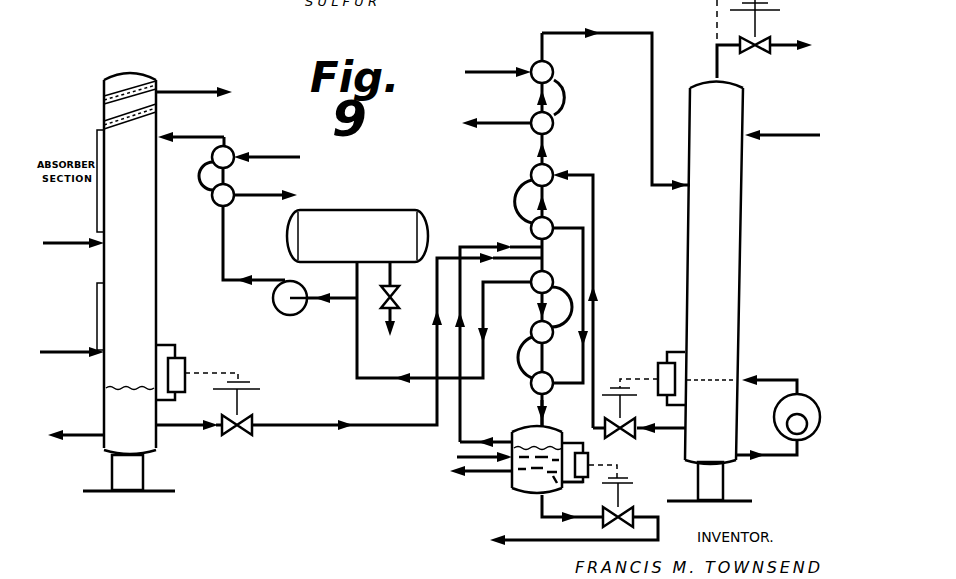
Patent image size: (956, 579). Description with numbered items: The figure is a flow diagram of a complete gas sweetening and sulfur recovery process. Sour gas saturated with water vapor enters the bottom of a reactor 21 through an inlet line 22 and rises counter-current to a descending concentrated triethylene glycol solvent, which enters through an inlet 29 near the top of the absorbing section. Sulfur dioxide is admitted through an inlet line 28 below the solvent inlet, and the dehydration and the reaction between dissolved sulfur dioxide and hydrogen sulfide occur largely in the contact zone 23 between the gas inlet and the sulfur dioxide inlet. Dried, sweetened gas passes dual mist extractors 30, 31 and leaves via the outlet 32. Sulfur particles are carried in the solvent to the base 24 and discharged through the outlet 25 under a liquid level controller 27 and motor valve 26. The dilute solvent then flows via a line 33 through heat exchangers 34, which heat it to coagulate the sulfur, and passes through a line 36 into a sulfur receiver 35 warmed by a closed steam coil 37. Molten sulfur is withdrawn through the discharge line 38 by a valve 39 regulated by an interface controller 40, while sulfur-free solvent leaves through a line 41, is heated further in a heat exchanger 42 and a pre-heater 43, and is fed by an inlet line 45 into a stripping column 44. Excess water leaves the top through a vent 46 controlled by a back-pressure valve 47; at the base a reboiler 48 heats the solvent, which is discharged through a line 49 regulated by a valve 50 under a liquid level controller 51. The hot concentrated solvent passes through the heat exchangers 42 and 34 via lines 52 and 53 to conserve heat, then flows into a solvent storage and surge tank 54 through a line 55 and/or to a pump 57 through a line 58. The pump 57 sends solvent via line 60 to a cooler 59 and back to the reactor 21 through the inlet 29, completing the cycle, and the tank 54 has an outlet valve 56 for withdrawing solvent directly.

The reactor 21 is at (157, 290).
The inlet line 22 is at (59, 352).
The contact zone 23 is at (107, 289).
The base 24 is at (150, 439).
The outlet 25 is at (180, 423).
The motor valve 26 is at (241, 435).
The liquid level controller 27 is at (187, 371).
The inlet line 28 is at (72, 249).
The inlet 29 is at (200, 142).
The mist extractor 30 is at (104, 117).
The mist extractor 31 is at (104, 92).
The outlet 32 is at (195, 88).
The line 33 is at (379, 424).
The heat exchangers 34 is at (549, 274).
The sulfur receiver 35 is at (506, 485).
The line 36 is at (538, 401).
The closed steam coil 37 is at (558, 488).
The discharge line 38 is at (533, 505).
The valve 39 is at (600, 519).
The interface controller 40 is at (590, 444).
The line 41 is at (461, 434).
The heat exchanger 42 is at (552, 222).
The pre-heater 43 is at (503, 98).
The stripping column 44 is at (745, 192).
The inlet line 45 is at (651, 154).
The vent 46 is at (713, 67).
The back-pressure valve 47 is at (781, 39).
The reboiler 48 is at (808, 438).
The line 49 is at (676, 435).
The valve 50 is at (628, 441).
The liquid level controller 51 is at (657, 368).
The line 52 is at (585, 243).
The line 53 is at (594, 238).
The solvent storage and surge tank 54 is at (391, 210).
The line 55 is at (356, 356).
The outlet valve 56 is at (405, 299).
The pump 57 is at (271, 303).
The line 58 is at (331, 287).
The cooler 59 is at (231, 147).
The line 60 is at (222, 226).